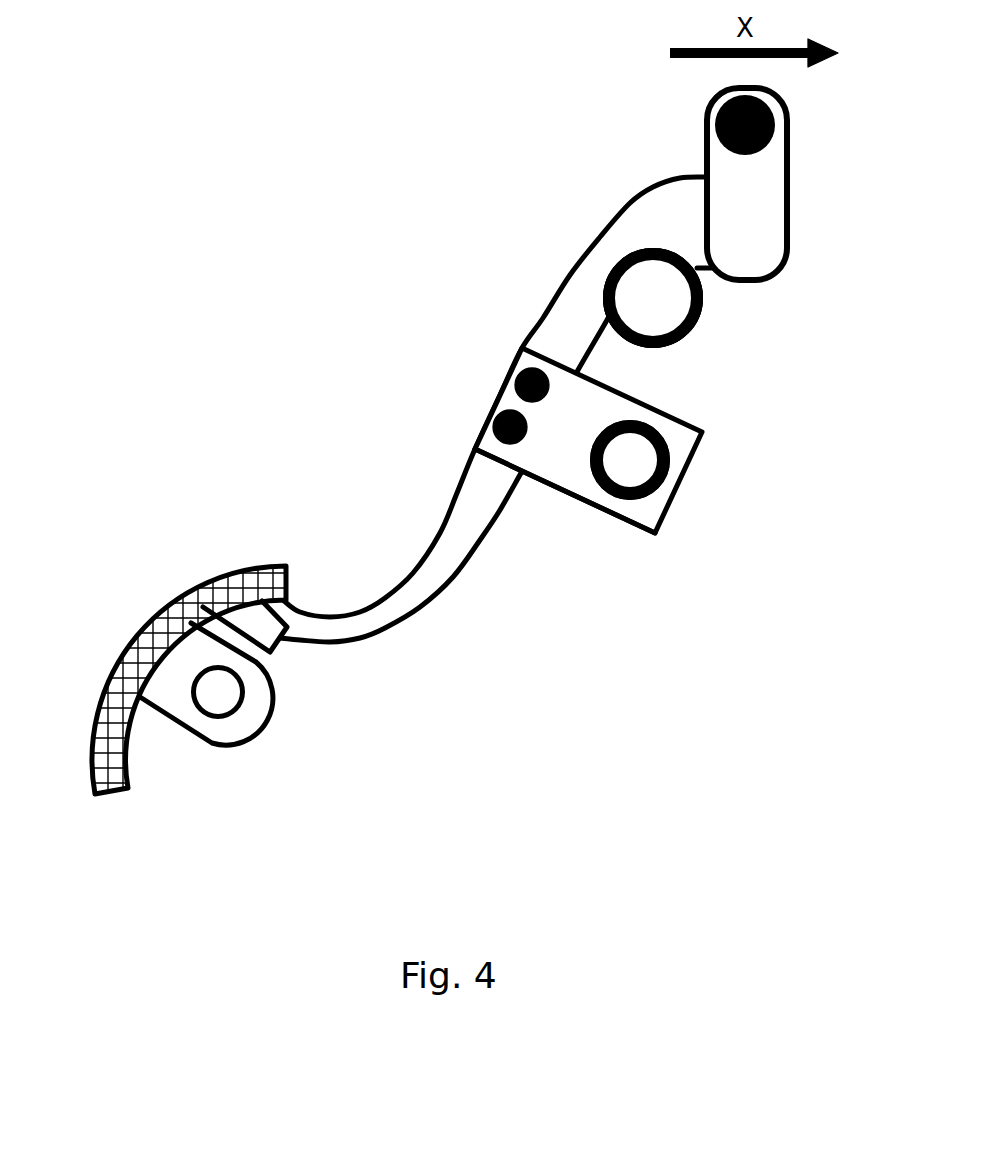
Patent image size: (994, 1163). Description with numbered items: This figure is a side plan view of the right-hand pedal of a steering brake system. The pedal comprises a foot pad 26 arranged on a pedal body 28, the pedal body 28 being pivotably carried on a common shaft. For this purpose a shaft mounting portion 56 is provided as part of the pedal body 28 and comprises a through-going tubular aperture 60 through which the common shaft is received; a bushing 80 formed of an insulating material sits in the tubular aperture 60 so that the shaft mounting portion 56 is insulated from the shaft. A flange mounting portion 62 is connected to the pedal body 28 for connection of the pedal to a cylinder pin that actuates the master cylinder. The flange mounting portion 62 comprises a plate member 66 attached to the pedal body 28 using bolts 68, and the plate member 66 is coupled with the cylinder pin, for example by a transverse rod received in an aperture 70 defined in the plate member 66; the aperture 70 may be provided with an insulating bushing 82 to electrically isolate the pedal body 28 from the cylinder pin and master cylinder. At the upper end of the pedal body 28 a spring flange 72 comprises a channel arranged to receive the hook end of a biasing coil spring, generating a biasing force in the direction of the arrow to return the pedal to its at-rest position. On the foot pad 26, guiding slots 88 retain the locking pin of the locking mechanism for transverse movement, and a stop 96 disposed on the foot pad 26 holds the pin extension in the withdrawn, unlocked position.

The foot pad 26 is at (187, 615).
The pedal body 28 is at (448, 567).
The shaft mounting portion 56 is at (607, 300).
The through-going tubular aperture 60 is at (653, 300).
The flange mounting portion 62 is at (560, 493).
The plate member 66 is at (593, 408).
The bolts 68 is at (527, 383).
The aperture 70 is at (630, 462).
The spring flange 72 is at (743, 120).
The bushing 80 is at (630, 262).
The insulating bushing 82 is at (660, 462).
The guiding slots 88 is at (227, 732).
The stop 96 is at (258, 635).